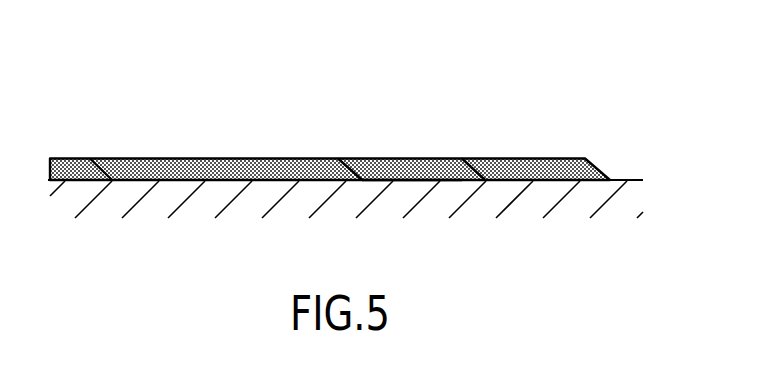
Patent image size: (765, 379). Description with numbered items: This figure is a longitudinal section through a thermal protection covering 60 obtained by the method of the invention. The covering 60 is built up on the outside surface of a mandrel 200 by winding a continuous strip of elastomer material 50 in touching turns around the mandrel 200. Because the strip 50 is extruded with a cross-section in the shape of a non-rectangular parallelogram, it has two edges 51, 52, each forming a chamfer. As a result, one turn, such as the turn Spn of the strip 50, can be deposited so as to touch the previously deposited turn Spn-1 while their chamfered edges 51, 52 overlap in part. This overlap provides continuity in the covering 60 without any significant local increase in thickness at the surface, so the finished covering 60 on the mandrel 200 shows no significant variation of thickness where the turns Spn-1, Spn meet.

The thermal protection covering 60 is at (330, 97).
The strip of elastomer material 50 is at (407, 158).
The edge 51 is at (345, 158).
The edge 52 is at (480, 158).
The turn Spn-1 is at (297, 158).
The turn Spn is at (428, 158).
The mandrel 200 is at (577, 207).